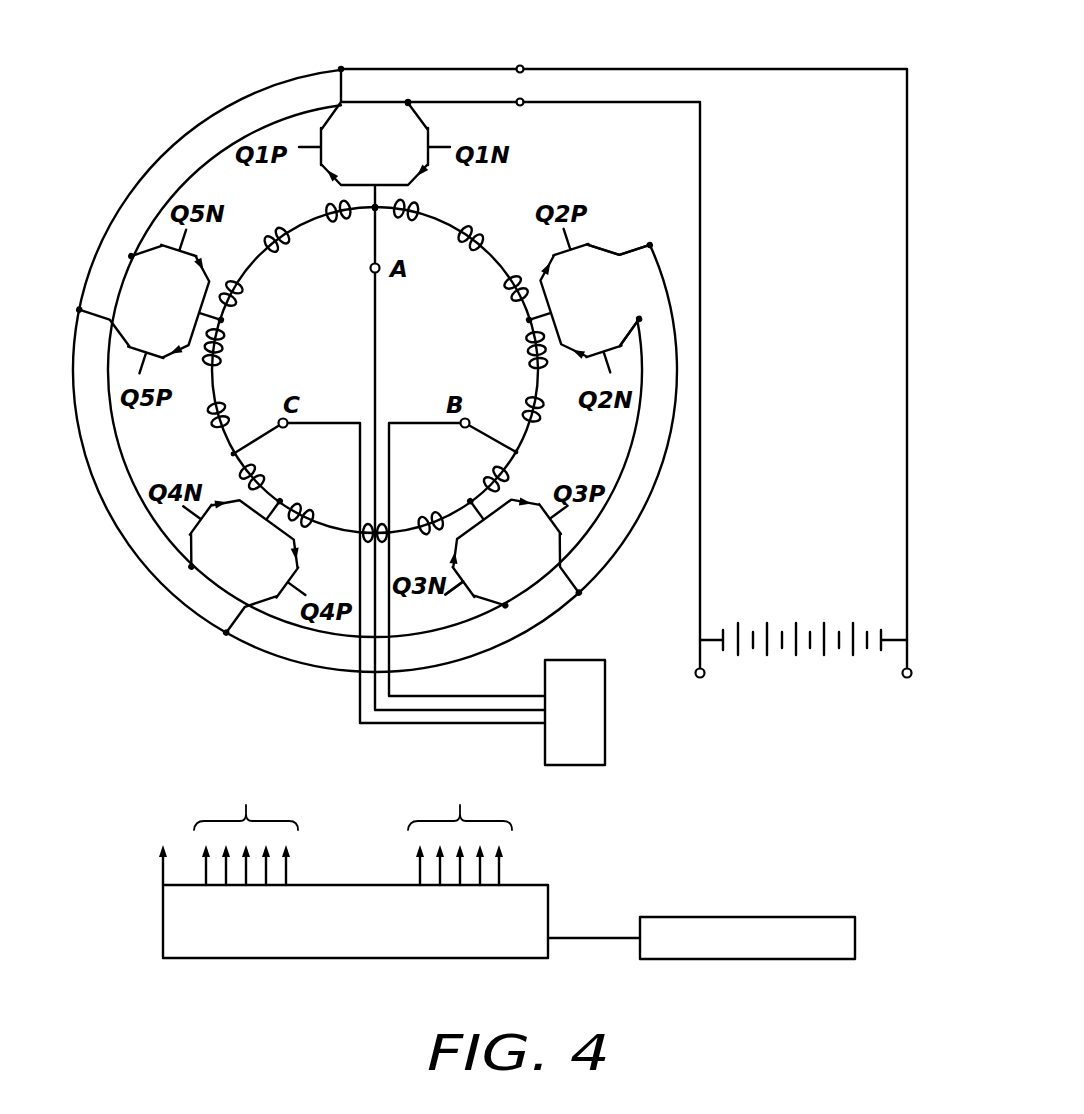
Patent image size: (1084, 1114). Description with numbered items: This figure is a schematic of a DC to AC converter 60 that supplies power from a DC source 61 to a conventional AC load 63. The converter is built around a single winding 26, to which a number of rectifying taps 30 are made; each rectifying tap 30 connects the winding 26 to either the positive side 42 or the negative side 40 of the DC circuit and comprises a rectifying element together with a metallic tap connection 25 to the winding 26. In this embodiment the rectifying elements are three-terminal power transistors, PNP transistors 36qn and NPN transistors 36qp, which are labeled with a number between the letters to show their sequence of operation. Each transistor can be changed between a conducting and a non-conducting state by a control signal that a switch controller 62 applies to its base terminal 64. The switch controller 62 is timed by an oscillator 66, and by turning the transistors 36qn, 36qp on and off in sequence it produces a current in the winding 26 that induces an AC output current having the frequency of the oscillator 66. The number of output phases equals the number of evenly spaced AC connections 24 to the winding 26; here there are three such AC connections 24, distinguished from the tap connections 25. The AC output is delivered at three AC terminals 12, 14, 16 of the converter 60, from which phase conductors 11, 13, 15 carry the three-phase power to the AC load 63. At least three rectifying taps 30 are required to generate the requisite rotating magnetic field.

The phase conductor 11 is at (378, 239).
The AC terminal 12 is at (369, 268).
The phase conductor 13 is at (491, 434).
The AC terminal 14 is at (469, 420).
The phase conductor 15 is at (236, 434).
The AC terminal 16 is at (289, 429).
The AC connection 24 is at (375, 213).
The tap connection 25 is at (386, 205).
The winding 26 is at (490, 232).
The rectifying tap 30 is at (146, 297).
The NPN power transistor 36qp is at (582, 246).
The PNP power transistor 36qn is at (614, 346).
The negative side of DC circuit 40 is at (445, 102).
The positive side of DC circuit 42 is at (445, 69).
The DC to AC converter 60 is at (193, 655).
The DC source 61 is at (813, 620).
The switch controller 62 is at (548, 923).
The AC load 63 is at (607, 710).
The base terminal 64 is at (452, 598).
The oscillator 66 is at (722, 917).